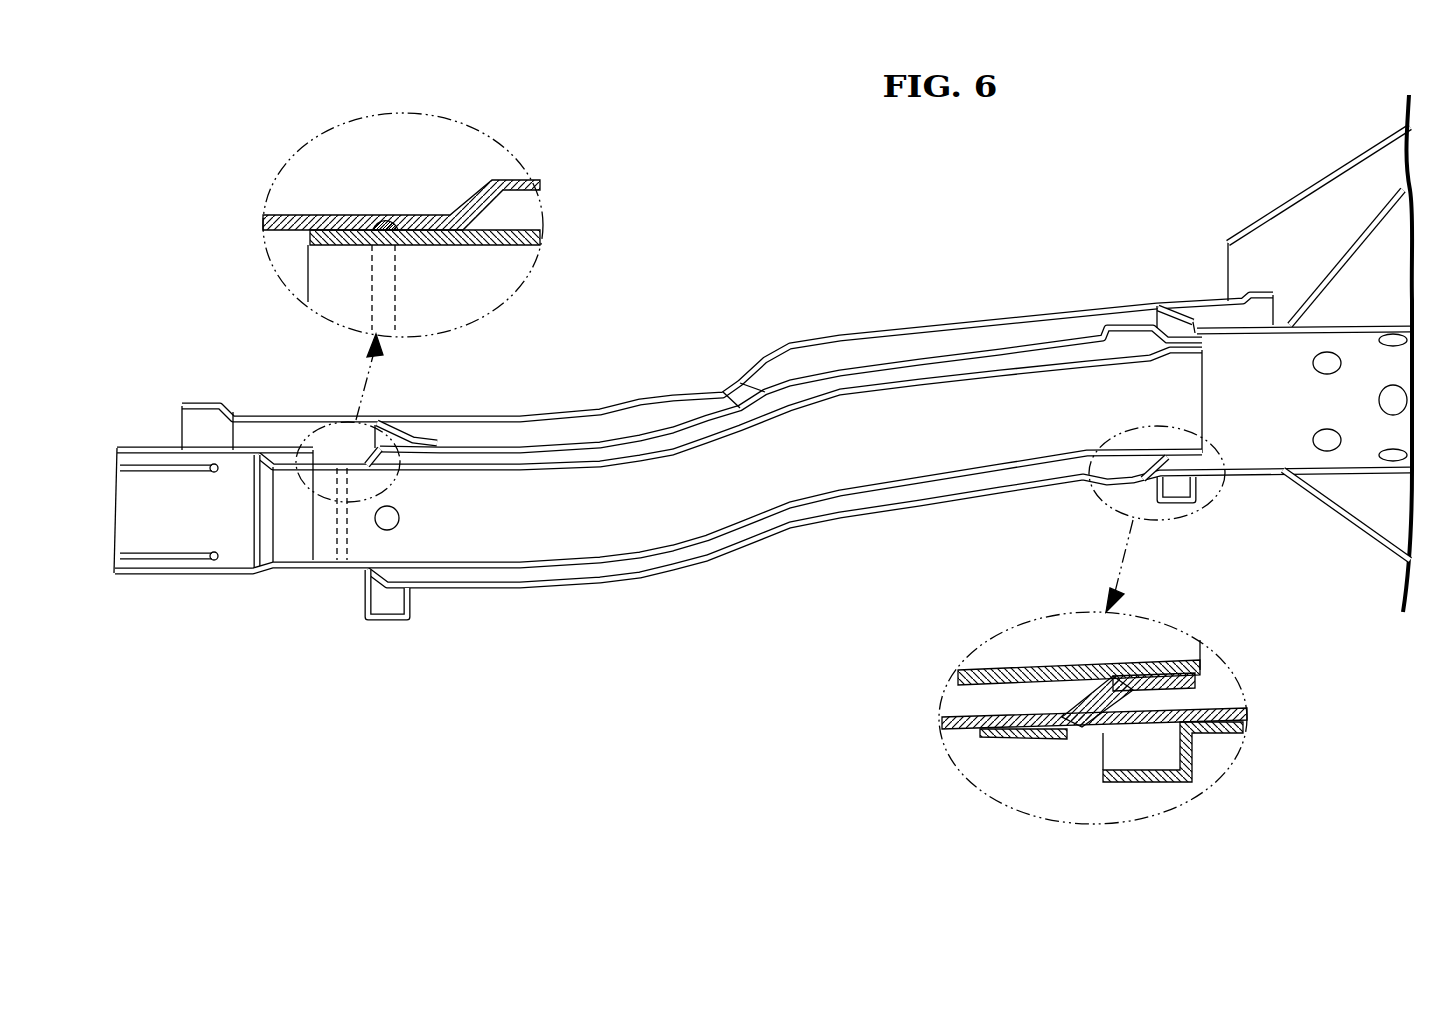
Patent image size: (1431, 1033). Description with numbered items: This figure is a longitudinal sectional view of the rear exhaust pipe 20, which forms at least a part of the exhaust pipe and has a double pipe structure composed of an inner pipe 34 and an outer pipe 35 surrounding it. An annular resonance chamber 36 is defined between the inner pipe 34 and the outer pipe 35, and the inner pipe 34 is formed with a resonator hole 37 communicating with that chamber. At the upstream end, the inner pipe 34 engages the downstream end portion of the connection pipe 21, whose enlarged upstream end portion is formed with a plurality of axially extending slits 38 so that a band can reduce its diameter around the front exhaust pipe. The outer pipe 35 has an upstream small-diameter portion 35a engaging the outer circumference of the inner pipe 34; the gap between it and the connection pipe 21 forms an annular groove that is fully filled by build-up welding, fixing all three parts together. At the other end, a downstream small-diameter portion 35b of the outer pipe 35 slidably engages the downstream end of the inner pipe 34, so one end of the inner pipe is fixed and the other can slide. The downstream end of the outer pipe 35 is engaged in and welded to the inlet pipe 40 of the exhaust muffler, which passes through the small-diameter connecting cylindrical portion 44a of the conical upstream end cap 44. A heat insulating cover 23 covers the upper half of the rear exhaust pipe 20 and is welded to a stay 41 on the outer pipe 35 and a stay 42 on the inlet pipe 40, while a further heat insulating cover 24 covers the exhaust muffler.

The rear exhaust pipe 20 is at (703, 574).
The connection pipe 21 is at (234, 412).
The heat insulating cover 23 is at (808, 342).
The heat insulating cover 24 is at (1250, 222).
The inner pipe 34 is at (528, 467).
The outer pipe 35 is at (866, 512).
The upstream small-diameter portion 35a is at (423, 215).
The downstream small-diameter portion 35b is at (1170, 688).
The annular resonance chamber 36 is at (685, 438).
The resonator hole 37 is at (400, 515).
The slits 38 is at (136, 553).
The inlet pipe 40 is at (1230, 474).
The stay 41 is at (420, 426).
The stay 42 is at (1177, 303).
The upstream end cap 44 is at (1343, 263).
The small-diameter connecting cylindrical portion 44a is at (1277, 477).